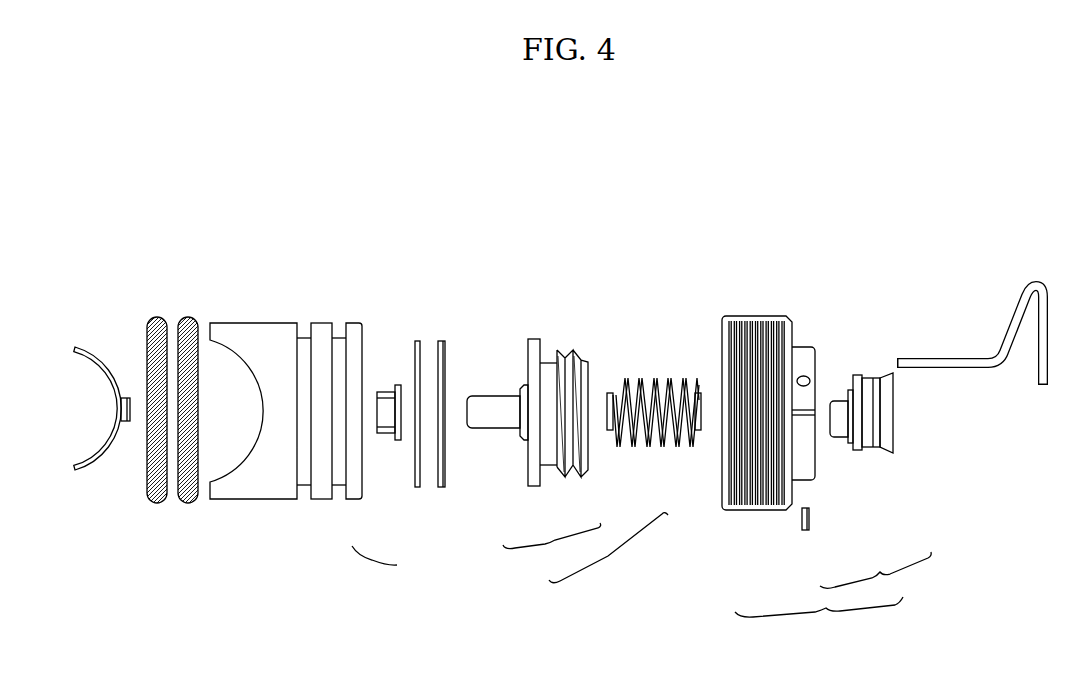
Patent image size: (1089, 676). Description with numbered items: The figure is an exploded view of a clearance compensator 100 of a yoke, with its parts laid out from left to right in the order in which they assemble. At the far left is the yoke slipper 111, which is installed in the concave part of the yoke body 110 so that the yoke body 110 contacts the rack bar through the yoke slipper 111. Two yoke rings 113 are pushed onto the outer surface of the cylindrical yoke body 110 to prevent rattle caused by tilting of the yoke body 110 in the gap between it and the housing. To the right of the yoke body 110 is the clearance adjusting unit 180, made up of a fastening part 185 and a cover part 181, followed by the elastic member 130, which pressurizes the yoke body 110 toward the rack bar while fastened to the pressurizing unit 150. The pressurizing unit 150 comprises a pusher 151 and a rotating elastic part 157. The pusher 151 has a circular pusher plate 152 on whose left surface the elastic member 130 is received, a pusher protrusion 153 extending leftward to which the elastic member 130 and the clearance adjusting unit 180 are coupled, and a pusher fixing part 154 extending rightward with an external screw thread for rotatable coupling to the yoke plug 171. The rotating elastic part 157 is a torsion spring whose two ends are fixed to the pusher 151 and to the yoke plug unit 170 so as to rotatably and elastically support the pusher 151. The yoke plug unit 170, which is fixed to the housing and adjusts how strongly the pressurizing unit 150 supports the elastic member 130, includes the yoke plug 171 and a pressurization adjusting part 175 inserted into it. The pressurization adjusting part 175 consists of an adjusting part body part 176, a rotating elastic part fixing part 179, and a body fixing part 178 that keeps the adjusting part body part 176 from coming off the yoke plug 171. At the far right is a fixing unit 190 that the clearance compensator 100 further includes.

The clearance compensator 100 is at (1014, 150).
The yoke slipper 111 is at (88, 466).
The yoke rings 113 is at (185, 500).
The yoke body 110 is at (267, 490).
The fastening part 185 is at (388, 418).
The cover part 181 is at (417, 487).
The clearance adjusting unit 180 is at (373, 566).
The elastic member 130 is at (442, 487).
The pusher protrusion 153 is at (498, 420).
The pusher plate 152 is at (535, 478).
The pusher fixing part 154 is at (568, 472).
The pusher 151 is at (552, 547).
The rotating elastic part 157 is at (648, 447).
The pressurizing unit 150 is at (608, 548).
The yoke plug 171 is at (757, 508).
The body fixing part 178 is at (807, 532).
The rotating elastic part fixing part 179 is at (840, 434).
The adjusting part body part 176 is at (868, 437).
The pressurization adjusting part 175 is at (875, 578).
The yoke plug unit 170 is at (819, 618).
The fixing unit 190 is at (1040, 292).